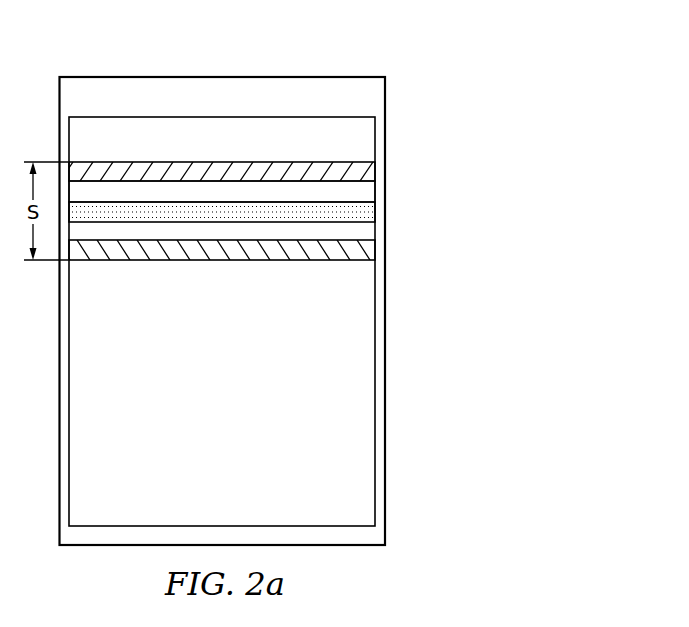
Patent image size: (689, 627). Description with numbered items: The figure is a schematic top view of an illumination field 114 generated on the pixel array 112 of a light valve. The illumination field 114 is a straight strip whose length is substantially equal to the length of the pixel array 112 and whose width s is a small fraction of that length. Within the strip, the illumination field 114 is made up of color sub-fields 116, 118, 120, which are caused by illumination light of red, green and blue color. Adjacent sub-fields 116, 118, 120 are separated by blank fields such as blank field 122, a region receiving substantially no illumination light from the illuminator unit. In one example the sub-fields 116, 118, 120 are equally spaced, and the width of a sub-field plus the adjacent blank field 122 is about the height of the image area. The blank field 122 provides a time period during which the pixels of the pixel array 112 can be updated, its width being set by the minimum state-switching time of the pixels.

The pixel array 112 is at (222, 260).
The illumination field 114 is at (251, 217).
The sub-field 116 is at (151, 166).
The sub-field 118 is at (317, 211).
The sub-field 120 is at (133, 254).
The blank field 122 is at (285, 190).